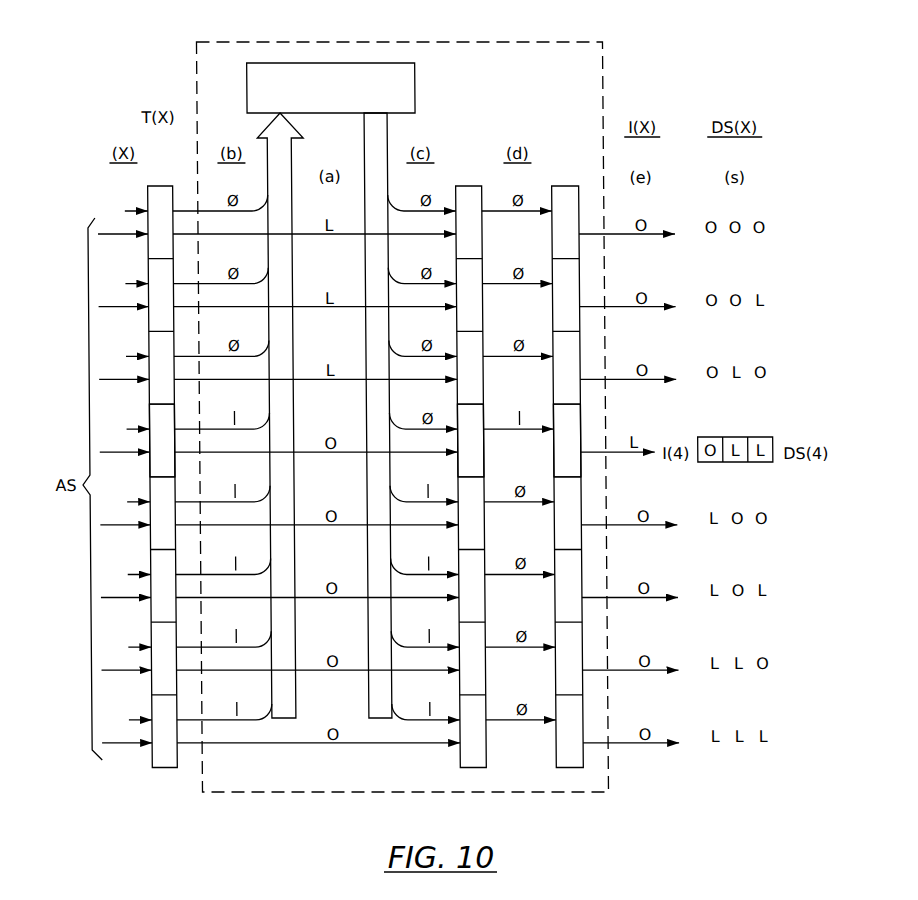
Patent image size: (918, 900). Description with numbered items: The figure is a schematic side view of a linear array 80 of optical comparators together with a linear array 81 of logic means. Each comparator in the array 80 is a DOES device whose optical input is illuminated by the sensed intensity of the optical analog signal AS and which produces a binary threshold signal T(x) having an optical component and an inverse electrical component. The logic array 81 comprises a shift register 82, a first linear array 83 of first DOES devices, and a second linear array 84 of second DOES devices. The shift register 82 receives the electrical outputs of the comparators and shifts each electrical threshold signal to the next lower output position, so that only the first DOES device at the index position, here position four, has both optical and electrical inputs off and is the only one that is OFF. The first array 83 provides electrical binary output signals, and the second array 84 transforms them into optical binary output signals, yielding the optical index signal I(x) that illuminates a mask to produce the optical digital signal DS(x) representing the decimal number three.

The linear array of optical comparators 80 is at (157, 768).
The linear array of logic means 81 is at (566, 42).
The shift register 82 is at (322, 95).
The first linear array of first DOES devices 83 is at (459, 757).
The second linear array of second DOES devices 84 is at (556, 757).